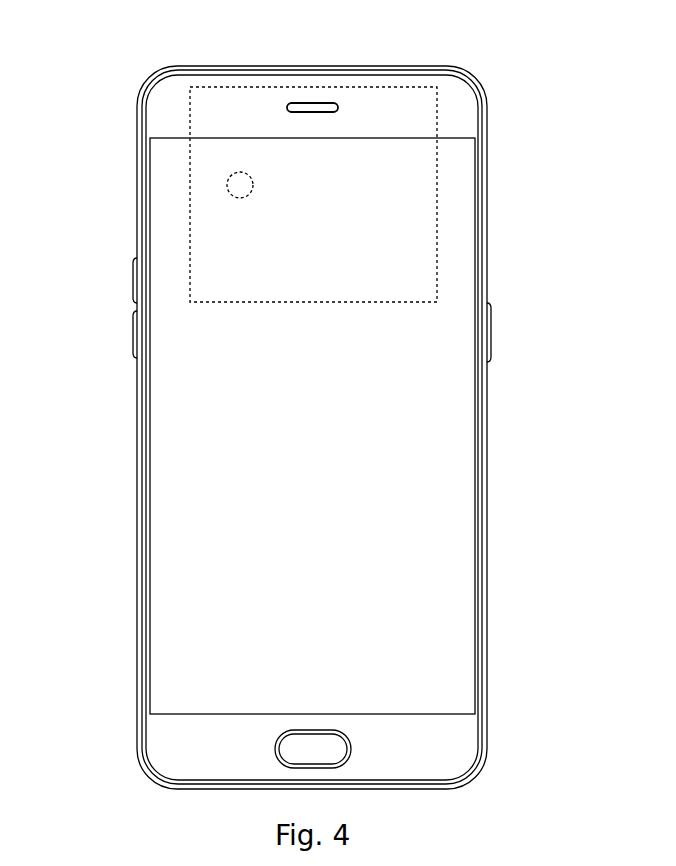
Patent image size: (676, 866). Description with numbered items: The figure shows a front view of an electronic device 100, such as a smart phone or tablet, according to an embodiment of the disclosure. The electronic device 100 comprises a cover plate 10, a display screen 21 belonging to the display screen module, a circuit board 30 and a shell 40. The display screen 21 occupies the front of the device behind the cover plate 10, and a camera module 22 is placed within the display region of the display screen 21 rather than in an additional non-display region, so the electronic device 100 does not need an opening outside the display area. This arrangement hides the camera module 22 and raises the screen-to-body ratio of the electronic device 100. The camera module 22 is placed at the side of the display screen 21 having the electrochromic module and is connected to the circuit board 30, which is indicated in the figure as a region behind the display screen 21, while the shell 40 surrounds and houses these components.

The cover plate 10 is at (170, 97).
The display screen 21 is at (453, 423).
The camera module 22 is at (227, 182).
The circuit board 30 is at (404, 173).
The shell 40 is at (488, 637).
The electronic device 100 is at (118, 463).